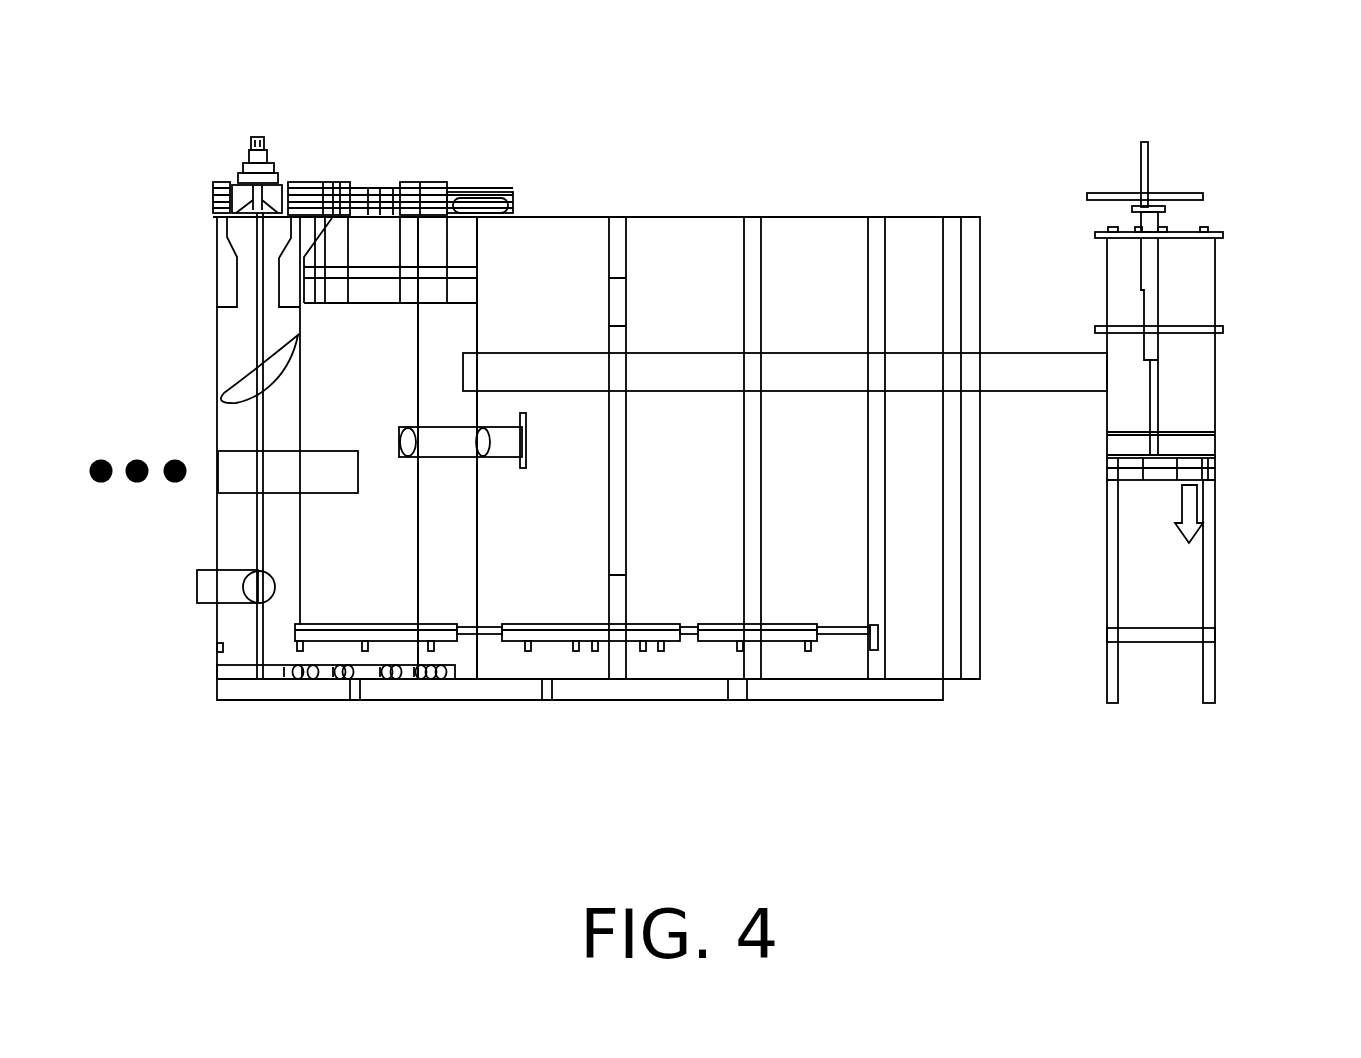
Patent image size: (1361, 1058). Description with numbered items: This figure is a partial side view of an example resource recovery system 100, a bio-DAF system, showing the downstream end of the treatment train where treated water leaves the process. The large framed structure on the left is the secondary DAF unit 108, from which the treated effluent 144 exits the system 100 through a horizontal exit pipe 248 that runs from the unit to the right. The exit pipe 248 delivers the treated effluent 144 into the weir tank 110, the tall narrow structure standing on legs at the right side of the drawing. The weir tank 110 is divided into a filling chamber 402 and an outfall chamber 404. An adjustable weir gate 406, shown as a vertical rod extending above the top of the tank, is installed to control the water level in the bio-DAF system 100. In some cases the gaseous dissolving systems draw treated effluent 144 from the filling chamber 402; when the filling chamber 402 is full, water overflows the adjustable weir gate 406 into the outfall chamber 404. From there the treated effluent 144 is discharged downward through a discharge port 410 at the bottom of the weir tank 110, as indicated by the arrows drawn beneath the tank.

The resource recovery system 100 is at (577, 370).
The secondary DAF unit 108 is at (469, 538).
The exit pipe 248 is at (704, 383).
The weir tank 110 is at (1184, 395).
The filling chamber 402 is at (1119, 292).
The outfall chamber 404 is at (1198, 390).
The adjustable weir gate 406 is at (1147, 142).
The discharge port 410 is at (1168, 487).
The treated effluent 144 is at (1188, 552).